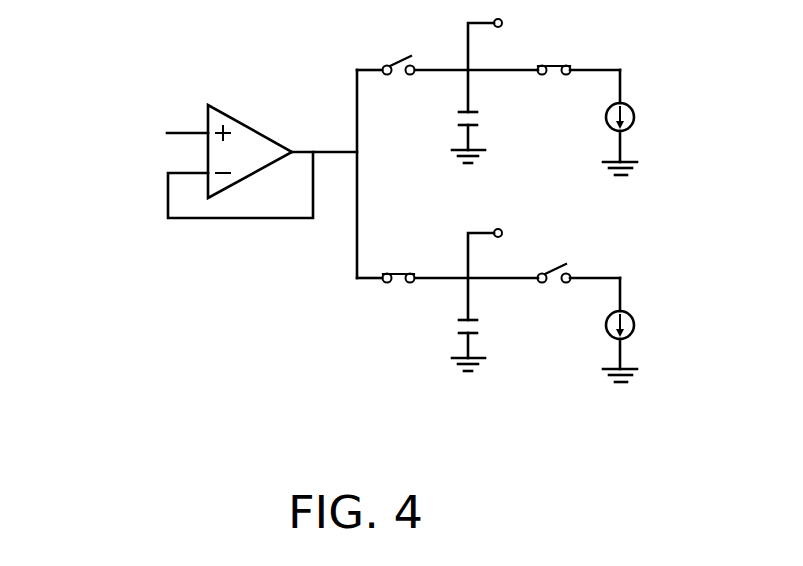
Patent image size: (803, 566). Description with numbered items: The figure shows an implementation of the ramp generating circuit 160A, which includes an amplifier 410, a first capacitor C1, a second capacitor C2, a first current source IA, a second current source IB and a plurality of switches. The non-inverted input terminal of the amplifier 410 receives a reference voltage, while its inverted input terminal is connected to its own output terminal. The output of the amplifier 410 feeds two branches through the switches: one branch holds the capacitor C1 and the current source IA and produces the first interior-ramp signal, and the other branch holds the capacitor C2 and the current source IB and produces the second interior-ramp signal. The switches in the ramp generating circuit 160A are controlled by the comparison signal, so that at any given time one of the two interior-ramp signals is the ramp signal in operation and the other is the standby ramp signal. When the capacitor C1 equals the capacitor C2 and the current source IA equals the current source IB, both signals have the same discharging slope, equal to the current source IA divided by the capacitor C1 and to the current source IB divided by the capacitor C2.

The amplifier 410 is at (249, 124).
The ramp generating circuit 160A is at (408, 195).
The capacitor C1 is at (482, 132).
The capacitor C2 is at (482, 340).
The current source IA is at (633, 139).
The current source IB is at (633, 346).